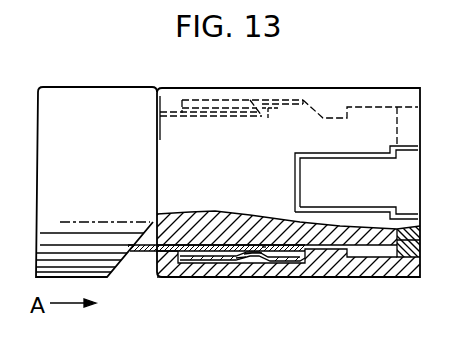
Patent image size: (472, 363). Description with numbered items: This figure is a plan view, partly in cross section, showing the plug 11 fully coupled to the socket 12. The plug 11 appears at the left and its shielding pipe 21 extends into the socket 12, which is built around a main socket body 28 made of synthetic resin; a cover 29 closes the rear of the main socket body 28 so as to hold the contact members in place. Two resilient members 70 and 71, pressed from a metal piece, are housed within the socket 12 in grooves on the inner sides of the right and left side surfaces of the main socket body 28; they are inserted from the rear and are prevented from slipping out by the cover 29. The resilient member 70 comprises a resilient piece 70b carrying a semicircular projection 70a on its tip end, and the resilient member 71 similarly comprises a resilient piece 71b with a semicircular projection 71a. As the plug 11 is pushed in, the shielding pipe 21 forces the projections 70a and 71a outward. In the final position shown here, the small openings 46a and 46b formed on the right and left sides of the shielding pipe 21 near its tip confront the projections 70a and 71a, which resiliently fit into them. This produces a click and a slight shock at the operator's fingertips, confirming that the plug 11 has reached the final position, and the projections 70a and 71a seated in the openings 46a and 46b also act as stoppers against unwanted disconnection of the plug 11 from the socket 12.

The plug 11 is at (85, 88).
The socket 12 is at (348, 89).
The shielding pipe 21 is at (138, 254).
The main socket body 28 is at (176, 86).
The cover 29 is at (370, 278).
The small opening 46a is at (264, 246).
The small opening 46b is at (269, 110).
The resilient member 70 is at (204, 266).
The semicircular projection 70a is at (250, 246).
The resilient piece 70b is at (235, 264).
The resilient member 71 is at (253, 99).
The semicircular projection 71a is at (257, 114).
The resilient piece 71b is at (223, 99).